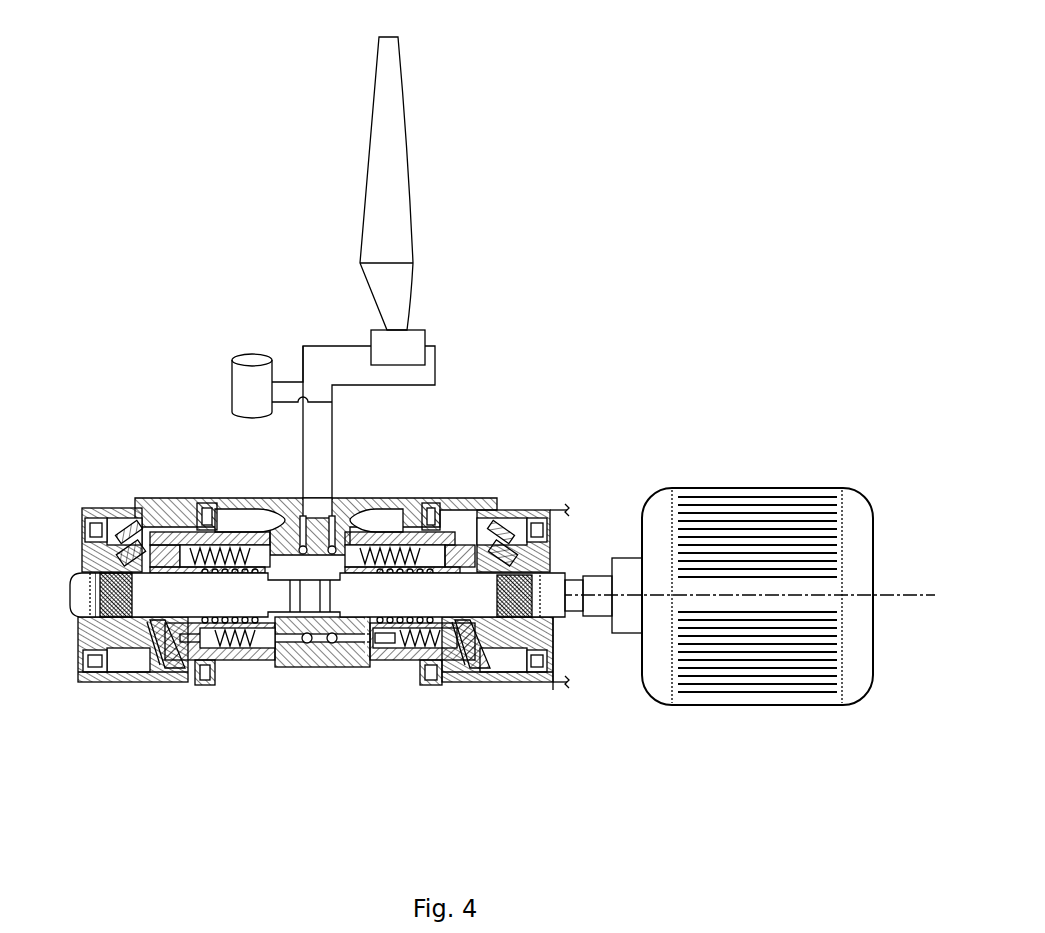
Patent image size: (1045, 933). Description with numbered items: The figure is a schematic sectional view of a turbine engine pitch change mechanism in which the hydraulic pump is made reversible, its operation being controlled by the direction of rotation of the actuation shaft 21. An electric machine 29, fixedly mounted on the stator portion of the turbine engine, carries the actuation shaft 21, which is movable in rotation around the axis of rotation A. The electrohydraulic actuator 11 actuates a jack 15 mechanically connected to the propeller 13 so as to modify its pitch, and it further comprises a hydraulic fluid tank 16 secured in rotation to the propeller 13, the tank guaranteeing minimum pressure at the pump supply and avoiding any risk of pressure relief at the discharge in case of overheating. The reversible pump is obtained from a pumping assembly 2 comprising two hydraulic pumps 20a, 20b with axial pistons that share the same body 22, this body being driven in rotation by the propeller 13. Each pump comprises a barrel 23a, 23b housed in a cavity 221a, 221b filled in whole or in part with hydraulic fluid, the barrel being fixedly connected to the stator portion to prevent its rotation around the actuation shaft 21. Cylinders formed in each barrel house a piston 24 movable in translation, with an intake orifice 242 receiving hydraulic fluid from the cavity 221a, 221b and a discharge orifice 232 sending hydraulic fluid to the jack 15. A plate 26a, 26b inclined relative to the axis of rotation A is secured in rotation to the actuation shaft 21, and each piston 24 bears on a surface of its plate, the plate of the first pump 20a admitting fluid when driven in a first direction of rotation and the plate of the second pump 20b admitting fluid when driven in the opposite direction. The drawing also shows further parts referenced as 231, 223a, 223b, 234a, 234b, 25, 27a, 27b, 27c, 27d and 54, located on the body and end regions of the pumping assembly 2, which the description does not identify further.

The pumping assembly 2 is at (300, 557).
The electrohydraulic actuator 11 is at (472, 375).
The propeller 13 is at (380, 182).
The jack 15 is at (398, 347).
The hydraulic fluid tank 16 is at (252, 386).
The first hydraulic pump 20a is at (274, 603).
The second hydraulic pump 20b is at (500, 603).
The actuation shaft 21 is at (598, 573).
The body 22 is at (348, 493).
The first cavity 221a is at (225, 520).
The second cavity 221b is at (390, 525).
The first fluid passage 223a is at (288, 645).
The second fluid passage 223b is at (350, 645).
The first barrel 23a is at (250, 660).
The second barrel 23b is at (375, 663).
The piston 231 is at (252, 533).
The discharge orifice 232 is at (287, 540).
The first shaft end 234a is at (72, 598).
The second shaft end 234b is at (560, 615).
The piston 24 is at (240, 655).
The intake orifice 242 is at (162, 655).
The clamping element 25 is at (145, 655).
The first plate 26a is at (115, 520).
The second plate 26b is at (505, 517).
The first cover 27a is at (92, 683).
The second cover 27b is at (207, 498).
The third cover 27c is at (532, 683).
The fourth cover 27d is at (428, 498).
The electric machine 29 is at (792, 483).
The fixed support 54 is at (580, 513).
The axis of rotation A is at (927, 595).